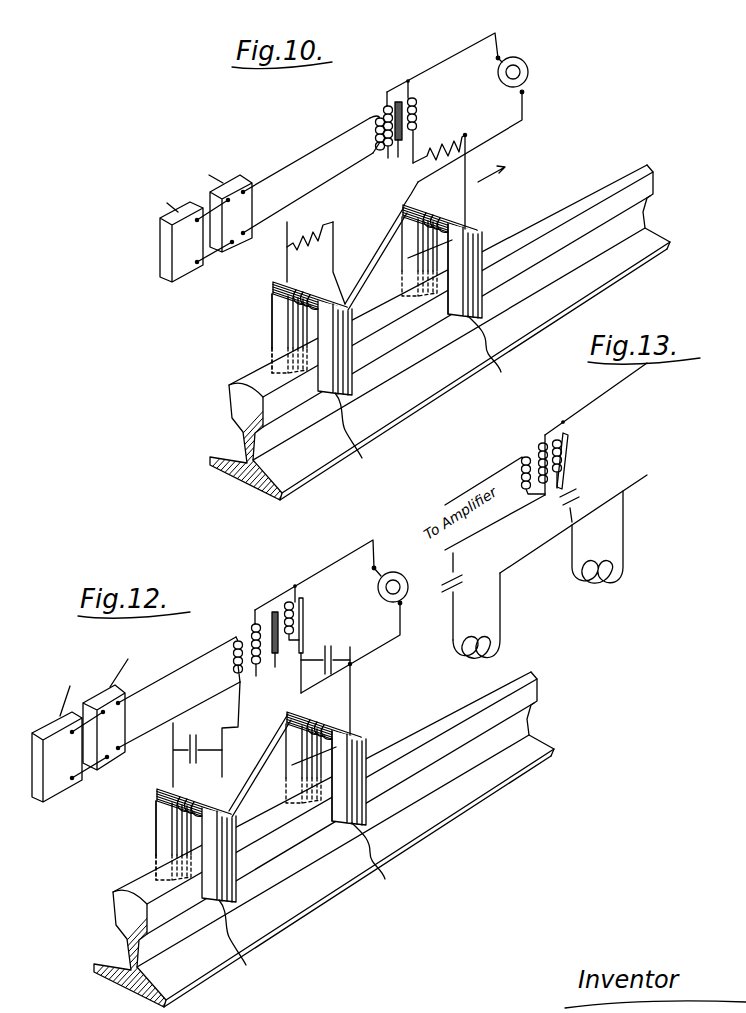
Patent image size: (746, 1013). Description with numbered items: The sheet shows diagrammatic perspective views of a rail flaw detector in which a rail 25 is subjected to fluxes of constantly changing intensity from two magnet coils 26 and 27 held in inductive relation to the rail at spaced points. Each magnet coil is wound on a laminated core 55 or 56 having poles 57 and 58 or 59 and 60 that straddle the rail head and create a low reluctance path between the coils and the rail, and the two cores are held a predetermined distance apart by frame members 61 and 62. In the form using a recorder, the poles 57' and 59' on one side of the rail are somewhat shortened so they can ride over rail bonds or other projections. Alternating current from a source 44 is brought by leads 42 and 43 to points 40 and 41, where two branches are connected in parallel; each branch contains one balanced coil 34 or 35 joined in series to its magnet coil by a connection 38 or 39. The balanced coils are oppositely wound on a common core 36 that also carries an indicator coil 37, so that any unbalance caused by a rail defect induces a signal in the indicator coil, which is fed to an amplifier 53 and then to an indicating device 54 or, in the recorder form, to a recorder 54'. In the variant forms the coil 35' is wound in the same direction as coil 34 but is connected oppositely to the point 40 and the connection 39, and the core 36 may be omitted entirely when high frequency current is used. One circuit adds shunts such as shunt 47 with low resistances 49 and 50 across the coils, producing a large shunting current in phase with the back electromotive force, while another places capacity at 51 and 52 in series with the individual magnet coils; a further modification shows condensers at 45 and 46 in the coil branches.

In FIG. 10, the rail 25 is at (419, 340).
In FIG. 12, the rail 25 is at (303, 842).
In FIG. 10, the magnet coil 26 is at (292, 300).
In FIG. 12, the magnet coil 26 is at (178, 810).
In FIG. 13, the magnet coil 26 is at (480, 632).
In FIG. 10, the magnet coil 27 is at (448, 216).
In FIG. 12, the magnet coil 27 is at (334, 725).
In FIG. 13, the magnet coil 27 is at (585, 583).
In FIG. 10, the balanced coil 34 is at (386, 107).
In FIG. 12, the balanced coil 34 is at (254, 625).
In FIG. 13, the balanced coil 34 is at (540, 446).
In FIG. 10, the balanced coil 35 is at (431, 122).
In FIG. 12, the balanced coil 35' is at (279, 604).
In FIG. 13, the balanced coil 35' is at (584, 464).
In FIG. 10, the core 36 is at (396, 143).
In FIG. 12, the core 36 is at (269, 653).
In FIG. 10, the indicator coil 37 is at (372, 147).
In FIG. 12, the indicator coil 37 is at (232, 670).
In FIG. 13, the indicator coil 37 is at (518, 462).
In FIG. 12, the connection 38 is at (238, 729).
In FIG. 13, the connection 38 is at (516, 520).
In FIG. 12, the connection 39 is at (304, 640).
In FIG. 13, the connection 39 is at (569, 438).
In FIG. 10, the parallel connection point 40 is at (408, 82).
In FIG. 12, the parallel connection point 40 is at (296, 585).
In FIG. 13, the parallel connection point 40 is at (563, 421).
In FIG. 10, the parallel connection point 41 is at (466, 158).
In FIG. 12, the parallel connection point 41 is at (351, 665).
In FIG. 13, the parallel connection point 41 is at (620, 492).
In FIG. 10, the lead 42 is at (456, 56).
In FIG. 12, the lead 42 is at (358, 551).
In FIG. 10, the lead 43 is at (508, 127).
In FIG. 12, the lead 43 is at (371, 625).
In FIG. 10, the alternating current source 44 is at (529, 70).
In FIG. 12, the alternating current source 44 is at (393, 572).
In FIG. 12, the condenser 45 is at (195, 734).
In FIG. 10, the condenser 46 is at (466, 134).
In FIG. 12, the condenser 46 is at (328, 646).
In FIG. 10, the shunt 47 is at (333, 222).
In FIG. 10, the low resistance 49 is at (310, 227).
In FIG. 10, the low resistance 50 is at (439, 141).
In FIG. 13, the capacity 51 is at (455, 562).
In FIG. 13, the capacity 52 is at (579, 495).
In FIG. 10, the amplifier 53 is at (245, 215).
In FIG. 12, the amplifier 53 is at (128, 690).
In FIG. 10, the indicating device 54 is at (137, 240).
In FIG. 12, the recorder 54' is at (49, 747).
In FIG. 10, the laminated core 55 is at (273, 292).
In FIG. 12, the laminated core 55 is at (166, 800).
In FIG. 10, the laminated core 56 is at (470, 223).
In FIG. 12, the laminated core 56 is at (354, 735).
In FIG. 10, the pole 57 is at (253, 354).
In FIG. 12, the shortened pole 57' is at (140, 858).
In FIG. 10, the pole 58 is at (356, 435).
In FIG. 12, the pole 58 is at (240, 945).
In FIG. 10, the pole 59 is at (415, 255).
In FIG. 12, the shortened pole 59' is at (299, 761).
In FIG. 10, the pole 60 is at (496, 353).
In FIG. 12, the pole 60 is at (368, 872).
In FIG. 10, the frame member 61 is at (380, 252).
In FIG. 12, the frame member 61 is at (266, 768).
In FIG. 10, the frame member 62 is at (380, 289).
In FIG. 12, the frame member 62 is at (264, 800).